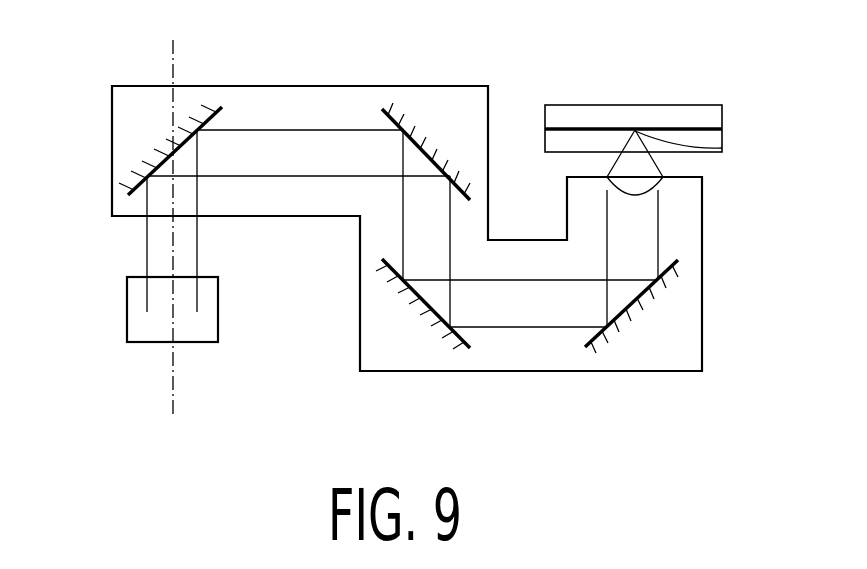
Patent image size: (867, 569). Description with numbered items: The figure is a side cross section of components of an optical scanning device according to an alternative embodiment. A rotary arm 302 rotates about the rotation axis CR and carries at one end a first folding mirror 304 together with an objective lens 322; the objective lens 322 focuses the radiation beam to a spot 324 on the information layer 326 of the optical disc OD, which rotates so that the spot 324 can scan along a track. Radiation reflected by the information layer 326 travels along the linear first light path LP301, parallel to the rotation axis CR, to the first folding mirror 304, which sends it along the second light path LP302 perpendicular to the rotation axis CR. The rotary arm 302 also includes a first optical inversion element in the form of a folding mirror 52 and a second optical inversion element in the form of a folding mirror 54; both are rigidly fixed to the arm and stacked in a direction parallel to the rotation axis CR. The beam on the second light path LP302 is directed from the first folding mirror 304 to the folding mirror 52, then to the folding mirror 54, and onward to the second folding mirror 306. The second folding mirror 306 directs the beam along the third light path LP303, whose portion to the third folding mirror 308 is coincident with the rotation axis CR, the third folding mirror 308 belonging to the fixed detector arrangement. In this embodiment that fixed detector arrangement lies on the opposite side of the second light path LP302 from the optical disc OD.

The rotary arm 302 is at (700, 340).
The first folding mirror 304 is at (672, 295).
The second folding mirror 306 is at (147, 176).
The third folding mirror 308 is at (138, 325).
The objective lens 322 is at (635, 183).
The spot 324 is at (722, 147).
The information layer 326 is at (708, 128).
The folding mirror 52 is at (407, 292).
The folding mirror 54 is at (403, 108).
The optical disc OD is at (697, 115).
The rotation axis CR is at (174, 45).
The first light path LP301 is at (640, 233).
The second light path LP302 is at (308, 150).
The third light path LP303 is at (163, 245).